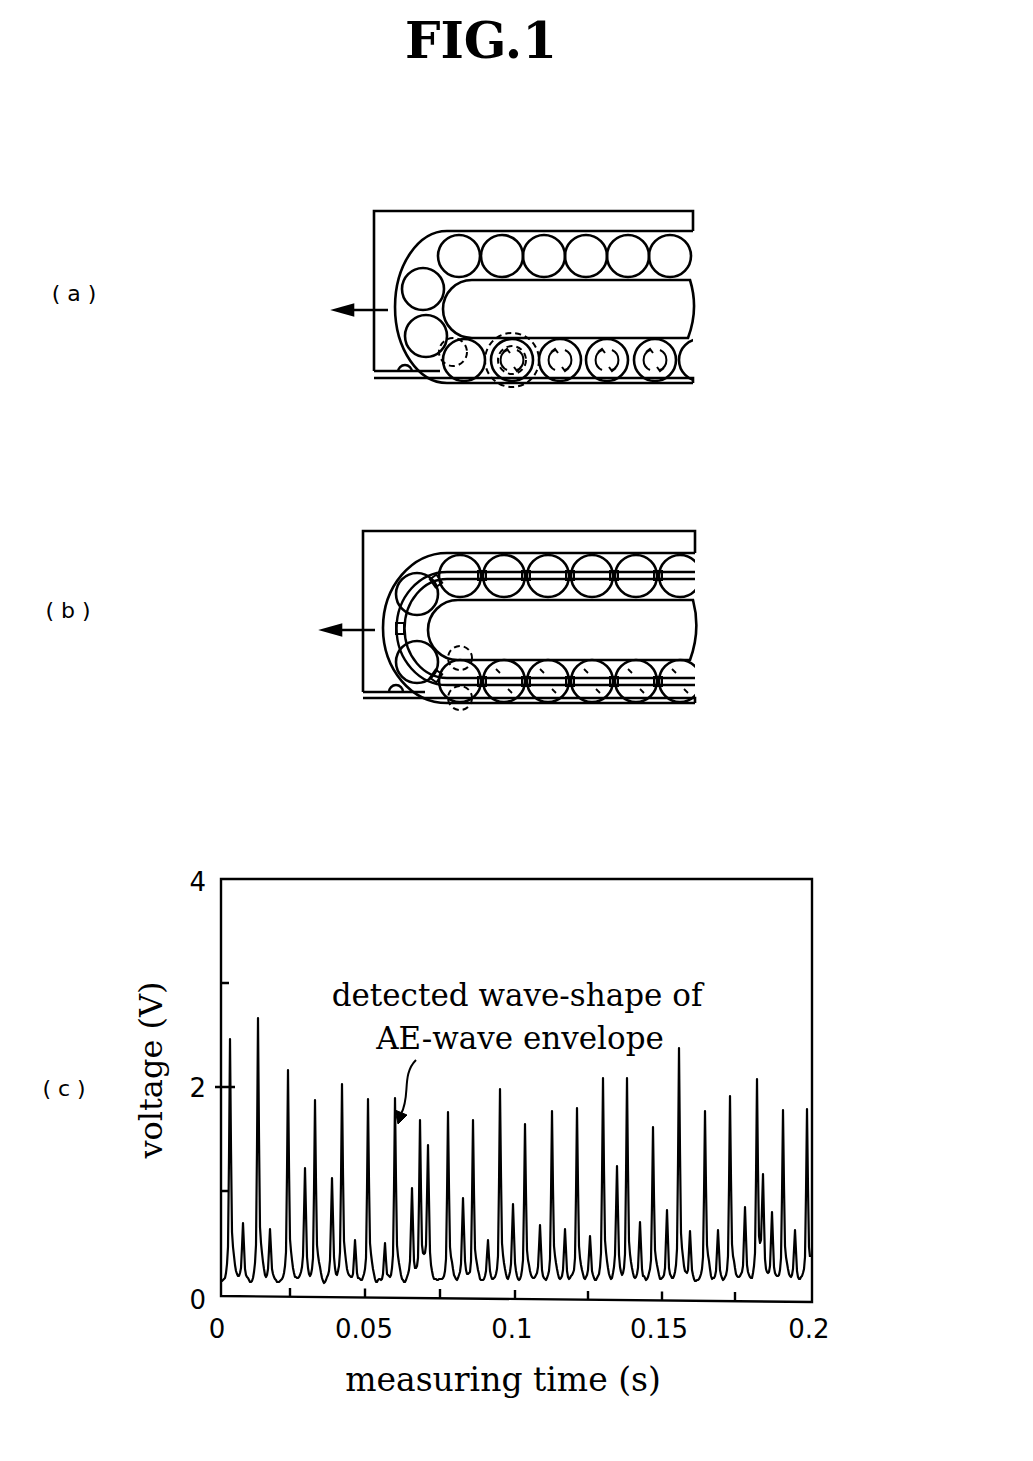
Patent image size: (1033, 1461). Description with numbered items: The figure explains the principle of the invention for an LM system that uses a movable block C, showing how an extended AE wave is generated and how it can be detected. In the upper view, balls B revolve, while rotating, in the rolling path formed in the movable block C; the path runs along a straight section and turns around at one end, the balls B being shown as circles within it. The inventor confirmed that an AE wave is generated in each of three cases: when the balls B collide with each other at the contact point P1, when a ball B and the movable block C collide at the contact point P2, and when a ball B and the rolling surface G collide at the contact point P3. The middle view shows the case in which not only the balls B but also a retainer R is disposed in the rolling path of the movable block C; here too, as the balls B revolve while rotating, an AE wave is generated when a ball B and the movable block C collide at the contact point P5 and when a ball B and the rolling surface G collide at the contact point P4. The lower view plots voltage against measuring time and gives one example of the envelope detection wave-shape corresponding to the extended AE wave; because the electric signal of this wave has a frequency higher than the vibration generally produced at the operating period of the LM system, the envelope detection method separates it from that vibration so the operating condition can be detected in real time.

The movable block C is at (374, 265).
The ball B is at (690, 246).
The retainer R is at (397, 591).
The rolling surface G is at (401, 373).
The contact point P1 is at (460, 367).
The contact point P2 is at (513, 346).
The contact point P3 is at (530, 384).
The contact point P4 is at (469, 708).
The contact point P5 is at (466, 650).